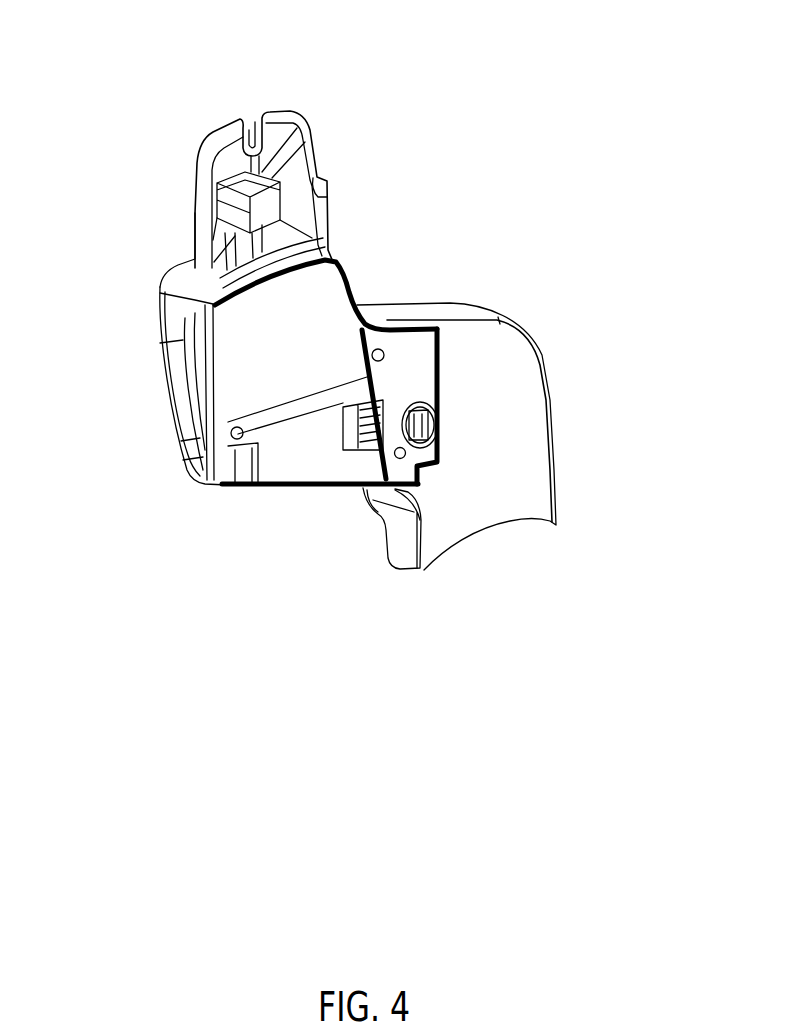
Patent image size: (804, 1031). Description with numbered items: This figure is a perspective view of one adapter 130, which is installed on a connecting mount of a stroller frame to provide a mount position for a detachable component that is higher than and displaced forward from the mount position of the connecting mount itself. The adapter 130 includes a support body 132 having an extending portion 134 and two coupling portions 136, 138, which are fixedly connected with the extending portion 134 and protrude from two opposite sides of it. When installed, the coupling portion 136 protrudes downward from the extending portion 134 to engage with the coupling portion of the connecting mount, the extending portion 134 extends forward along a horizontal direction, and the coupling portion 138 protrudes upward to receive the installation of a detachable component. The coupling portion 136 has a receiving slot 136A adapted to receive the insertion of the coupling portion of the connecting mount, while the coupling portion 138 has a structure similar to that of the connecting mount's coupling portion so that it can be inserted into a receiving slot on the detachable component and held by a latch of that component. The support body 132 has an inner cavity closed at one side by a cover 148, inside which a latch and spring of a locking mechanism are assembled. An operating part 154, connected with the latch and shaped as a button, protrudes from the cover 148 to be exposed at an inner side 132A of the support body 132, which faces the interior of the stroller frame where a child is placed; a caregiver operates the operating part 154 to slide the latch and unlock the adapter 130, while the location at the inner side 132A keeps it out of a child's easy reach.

The adapter 130 is at (125, 112).
The coupling portion 138 is at (314, 177).
The extending portion 134 is at (382, 312).
The cover 148 is at (270, 335).
The support body 132 is at (188, 472).
The inner side 132A is at (452, 393).
The operating part 154 is at (443, 425).
The coupling portion 136 is at (535, 477).
The receiving slot 136A is at (493, 540).